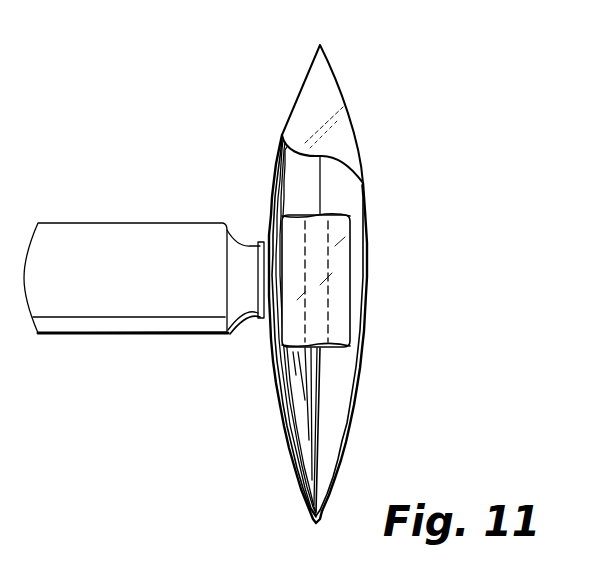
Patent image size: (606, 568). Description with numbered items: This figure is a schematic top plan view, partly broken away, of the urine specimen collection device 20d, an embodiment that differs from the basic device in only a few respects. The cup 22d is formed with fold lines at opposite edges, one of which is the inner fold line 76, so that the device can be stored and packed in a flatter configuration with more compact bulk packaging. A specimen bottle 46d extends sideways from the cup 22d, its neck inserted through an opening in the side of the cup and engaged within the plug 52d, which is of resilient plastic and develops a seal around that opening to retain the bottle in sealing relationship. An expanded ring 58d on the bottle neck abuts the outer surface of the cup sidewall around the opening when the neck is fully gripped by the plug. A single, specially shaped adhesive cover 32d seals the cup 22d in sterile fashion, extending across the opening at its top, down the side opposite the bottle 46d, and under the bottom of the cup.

The device 20d is at (566, 47).
The cup 22d is at (377, 196).
The adhesive cover 32d is at (328, 92).
The specimen bottle 46d is at (78, 222).
The plug 52d is at (352, 276).
The expanded ring 58d is at (262, 322).
The inner fold line 76 is at (318, 398).